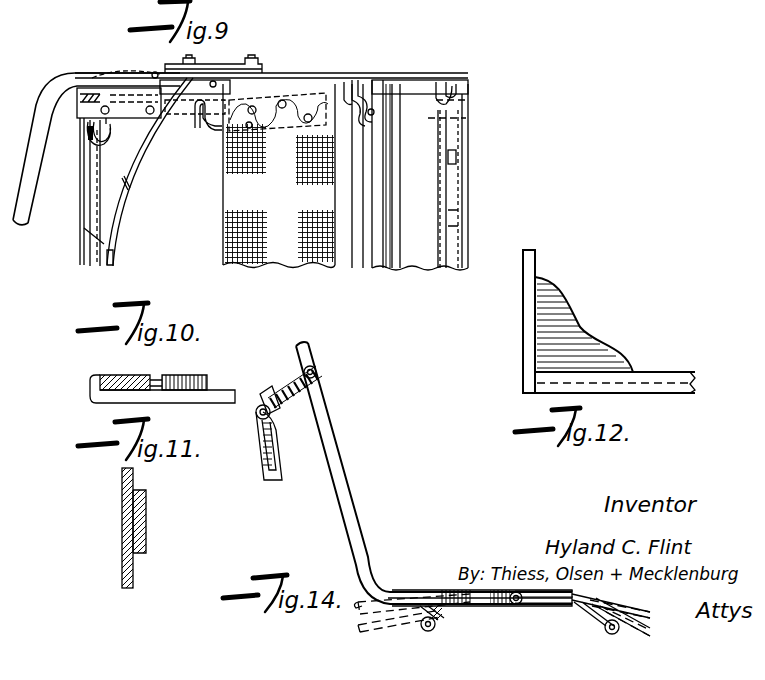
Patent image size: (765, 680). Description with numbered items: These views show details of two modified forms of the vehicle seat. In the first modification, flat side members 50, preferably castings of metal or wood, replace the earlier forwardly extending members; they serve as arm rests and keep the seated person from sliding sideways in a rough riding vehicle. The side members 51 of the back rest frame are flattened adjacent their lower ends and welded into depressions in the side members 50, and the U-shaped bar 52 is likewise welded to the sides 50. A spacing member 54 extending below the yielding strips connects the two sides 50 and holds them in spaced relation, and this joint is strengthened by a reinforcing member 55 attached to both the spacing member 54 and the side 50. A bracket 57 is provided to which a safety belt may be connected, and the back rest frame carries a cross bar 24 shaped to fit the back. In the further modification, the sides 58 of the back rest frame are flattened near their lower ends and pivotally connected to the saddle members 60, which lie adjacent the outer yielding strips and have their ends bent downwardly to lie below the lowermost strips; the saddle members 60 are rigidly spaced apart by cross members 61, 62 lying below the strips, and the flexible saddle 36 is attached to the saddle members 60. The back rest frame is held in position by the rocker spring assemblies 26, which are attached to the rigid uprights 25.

In FIG. 9, the second cross bar 24 is at (136, 170).
In FIG. 14, the upright 25 is at (276, 452).
In FIG. 14, the rocker spring assembly 26 is at (281, 375).
In FIG. 9, the saddle member 36 is at (274, 92).
In FIG. 14, the saddle member 36 is at (508, 606).
In FIG. 9, the side member 50 is at (352, 80).
In FIG. 10, the side member 50 is at (97, 400).
In FIG. 11, the side member 50 is at (121, 523).
In FIG. 12, the side member 50 is at (535, 314).
In FIG. 9, the side member of the back rest frame 51 is at (88, 84).
In FIG. 10, the side member of the back rest frame 51 is at (116, 380).
In FIG. 9, the U-shaped bar 52 is at (80, 212).
In FIG. 11, the U-shaped bar 52 is at (140, 522).
In FIG. 9, the spacing member 54 is at (365, 175).
In FIG. 12, the spacing member 54 is at (676, 394).
In FIG. 9, the reinforcing member 55 is at (372, 88).
In FIG. 12, the reinforcing member 55 is at (564, 330).
In FIG. 9, the bracket 57 is at (214, 72).
In FIG. 14, the side of the back rest frame 58 is at (340, 455).
In FIG. 14, the saddle member 60 is at (432, 608).
In FIG. 14, the cross member 61 is at (604, 628).
In FIG. 14, the cross member 62 is at (436, 626).